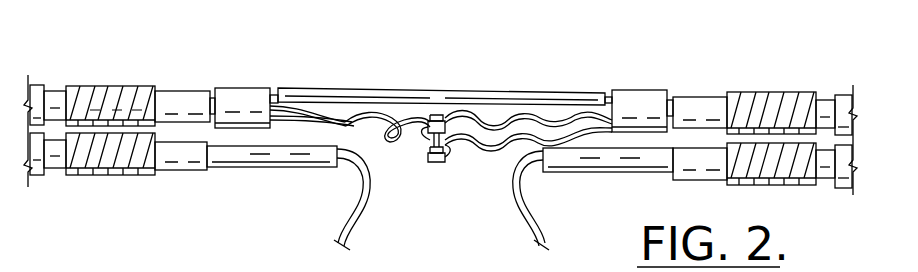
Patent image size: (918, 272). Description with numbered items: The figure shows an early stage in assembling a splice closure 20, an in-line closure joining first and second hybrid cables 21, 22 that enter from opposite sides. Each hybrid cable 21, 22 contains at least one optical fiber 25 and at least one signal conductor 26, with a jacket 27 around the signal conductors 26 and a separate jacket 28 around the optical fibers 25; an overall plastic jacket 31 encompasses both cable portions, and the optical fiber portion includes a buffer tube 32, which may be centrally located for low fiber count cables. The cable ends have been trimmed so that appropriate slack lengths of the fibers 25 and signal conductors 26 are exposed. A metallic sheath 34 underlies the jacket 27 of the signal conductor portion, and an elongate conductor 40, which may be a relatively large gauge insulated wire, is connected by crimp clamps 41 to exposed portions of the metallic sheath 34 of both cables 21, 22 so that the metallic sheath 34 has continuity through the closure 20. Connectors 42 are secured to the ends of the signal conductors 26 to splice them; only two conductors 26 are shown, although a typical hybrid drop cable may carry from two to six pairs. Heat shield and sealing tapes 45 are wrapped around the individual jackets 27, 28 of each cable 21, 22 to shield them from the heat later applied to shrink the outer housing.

The splice closure 20 is at (520, 52).
The first hybrid cable 21 is at (840, 93).
The second hybrid cable 22 is at (45, 84).
The optical fiber 25 is at (348, 213).
The signal conductor 26 is at (345, 128).
The jacket for signal conductors 27 is at (163, 91).
The jacket for optical fibers 28 is at (181, 171).
The overall plastic jacket 31 is at (35, 178).
The buffer tube 32 is at (246, 169).
The metallic sheath 34 is at (212, 97).
The elongate conductor 40 is at (305, 88).
The crimp clamp 41 is at (242, 88).
The connector 42 is at (428, 157).
The heat shield and sealing tape 45 is at (105, 86).